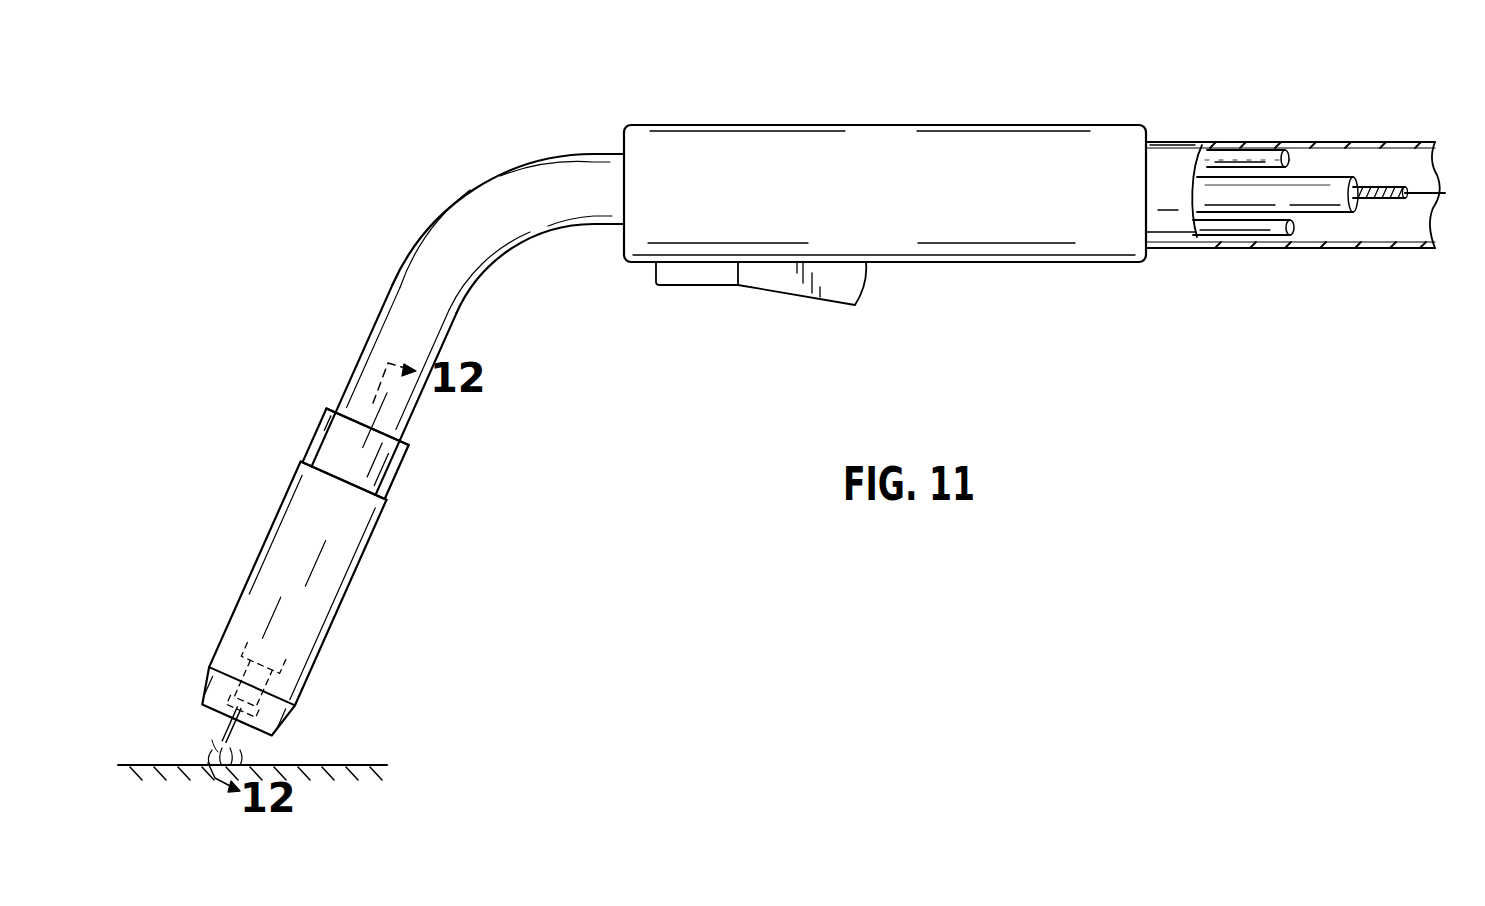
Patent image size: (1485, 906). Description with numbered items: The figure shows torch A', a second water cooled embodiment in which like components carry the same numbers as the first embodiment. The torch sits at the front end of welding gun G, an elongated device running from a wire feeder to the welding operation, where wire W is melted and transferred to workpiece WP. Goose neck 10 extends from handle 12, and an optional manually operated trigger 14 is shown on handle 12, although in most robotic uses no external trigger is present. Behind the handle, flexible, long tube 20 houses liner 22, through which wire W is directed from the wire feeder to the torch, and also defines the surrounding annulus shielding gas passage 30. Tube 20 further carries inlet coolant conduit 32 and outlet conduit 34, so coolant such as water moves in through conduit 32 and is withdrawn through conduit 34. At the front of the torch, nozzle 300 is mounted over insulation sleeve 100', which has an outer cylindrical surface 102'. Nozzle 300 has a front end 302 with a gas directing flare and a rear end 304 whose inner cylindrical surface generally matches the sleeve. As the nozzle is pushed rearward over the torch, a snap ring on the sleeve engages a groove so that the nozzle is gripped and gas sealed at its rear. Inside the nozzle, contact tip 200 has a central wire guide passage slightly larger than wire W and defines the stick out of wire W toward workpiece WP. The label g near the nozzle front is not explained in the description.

The goose neck 10 is at (466, 186).
The handle 12 is at (918, 135).
The manually operated trigger 14 is at (832, 290).
The flexible tube 20 is at (1322, 140).
The liner 22 is at (1388, 188).
The shielding gas passage 30 is at (1360, 206).
The inlet coolant conduit 32 is at (1255, 158).
The outlet conduit 34 is at (1257, 228).
The welding gun G is at (1215, 142).
The wire W is at (1445, 190).
The insulation sleeve 100' is at (414, 453).
The outer cylindrical surface 102' is at (324, 403).
The rear end 304 is at (375, 483).
The nozzle 300 is at (246, 556).
The front end 302 is at (210, 693).
The contact tip 200 is at (285, 684).
The gas flow g is at (215, 725).
The workpiece WP is at (357, 763).
The torch A' is at (204, 433).